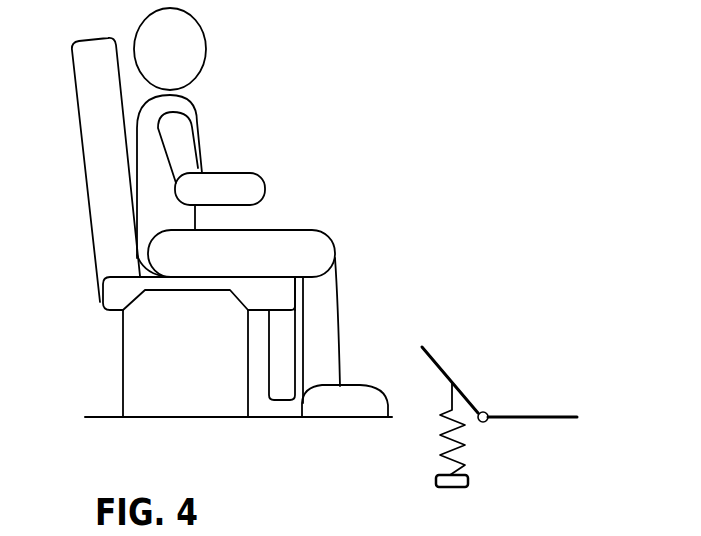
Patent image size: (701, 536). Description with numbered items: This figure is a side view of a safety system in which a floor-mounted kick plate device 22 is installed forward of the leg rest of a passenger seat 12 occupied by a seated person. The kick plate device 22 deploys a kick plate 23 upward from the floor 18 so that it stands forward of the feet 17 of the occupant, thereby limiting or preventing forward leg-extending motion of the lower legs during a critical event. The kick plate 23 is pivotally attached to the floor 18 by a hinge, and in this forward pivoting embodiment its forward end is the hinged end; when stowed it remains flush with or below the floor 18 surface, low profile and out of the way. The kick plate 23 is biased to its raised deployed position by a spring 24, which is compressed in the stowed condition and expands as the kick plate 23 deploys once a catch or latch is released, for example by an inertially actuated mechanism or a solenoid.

The seat base 12 is at (112, 295).
The feet 17 is at (362, 385).
The floor 18 is at (540, 417).
The kick plate device 22 is at (483, 413).
The kick plate 23 is at (438, 360).
The spring 24 is at (440, 443).